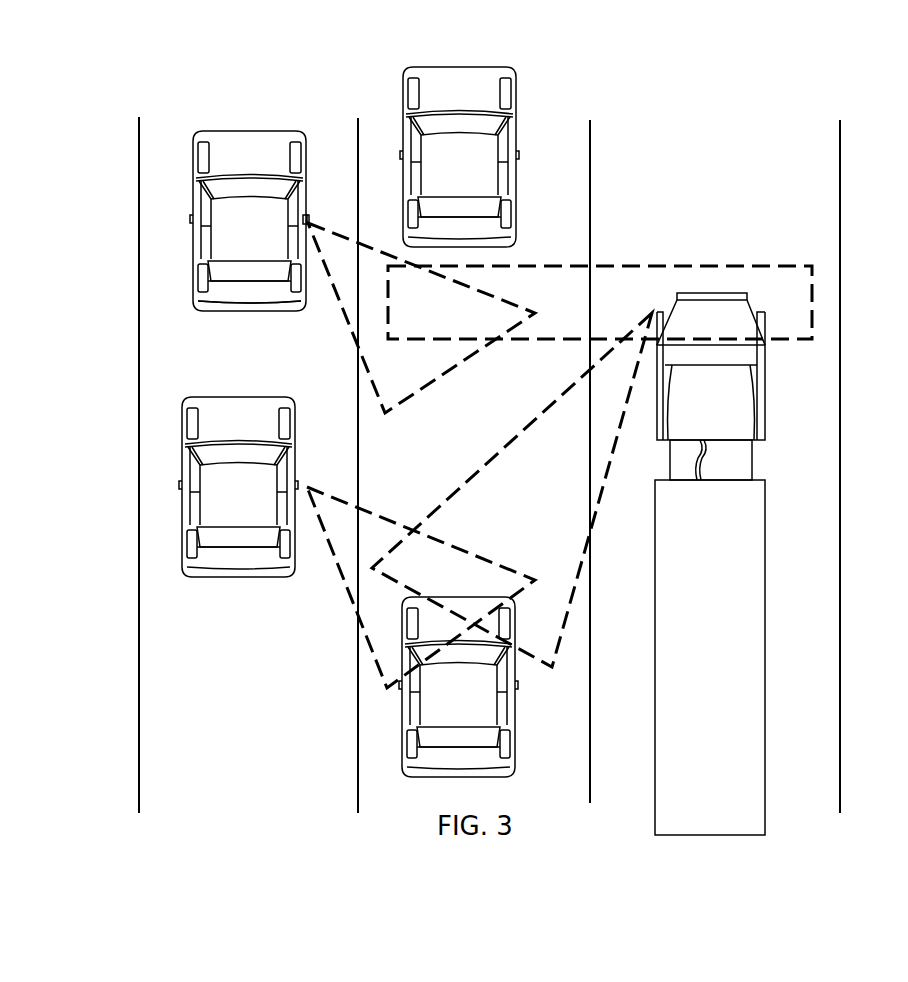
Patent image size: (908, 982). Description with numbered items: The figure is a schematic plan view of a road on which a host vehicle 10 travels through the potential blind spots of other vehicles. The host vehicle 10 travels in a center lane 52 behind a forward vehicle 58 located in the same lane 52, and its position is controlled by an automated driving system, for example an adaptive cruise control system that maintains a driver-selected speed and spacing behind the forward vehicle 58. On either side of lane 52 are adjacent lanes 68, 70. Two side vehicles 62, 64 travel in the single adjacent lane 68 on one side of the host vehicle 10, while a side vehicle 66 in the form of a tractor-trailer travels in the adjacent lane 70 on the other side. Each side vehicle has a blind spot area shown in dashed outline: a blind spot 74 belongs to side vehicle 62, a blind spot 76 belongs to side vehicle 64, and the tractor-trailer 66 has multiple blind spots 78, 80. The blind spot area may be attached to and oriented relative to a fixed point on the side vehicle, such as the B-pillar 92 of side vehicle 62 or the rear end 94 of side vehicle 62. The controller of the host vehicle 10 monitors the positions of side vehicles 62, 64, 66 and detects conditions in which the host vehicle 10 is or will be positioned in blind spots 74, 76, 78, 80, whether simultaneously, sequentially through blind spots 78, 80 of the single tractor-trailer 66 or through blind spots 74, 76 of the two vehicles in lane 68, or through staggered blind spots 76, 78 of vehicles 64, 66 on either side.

The host vehicle 10 is at (443, 698).
The lane 52 is at (580, 115).
The forward vehicle 58 is at (472, 157).
The side vehicle 62 is at (232, 238).
The side vehicle 64 is at (210, 505).
The side vehicle 66 is at (717, 645).
The adjacent lane 68 is at (167, 118).
The adjacent lane 70 is at (783, 140).
The blind spot 74 is at (368, 322).
The blind spot 76 is at (372, 622).
The blind spot 78 is at (600, 295).
The blind spot 80 is at (552, 533).
The B-pillar 92 is at (305, 223).
The rear end 94 is at (260, 308).